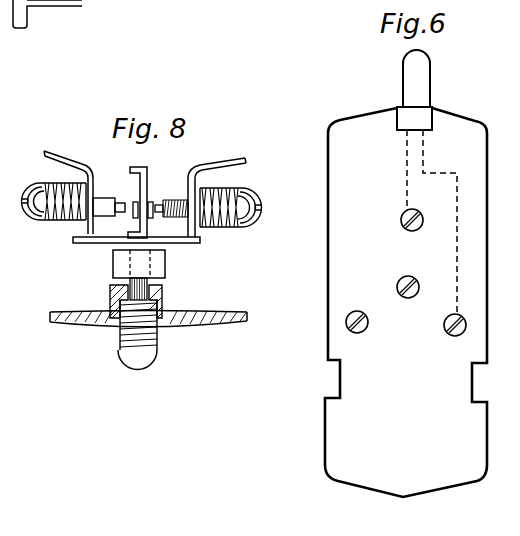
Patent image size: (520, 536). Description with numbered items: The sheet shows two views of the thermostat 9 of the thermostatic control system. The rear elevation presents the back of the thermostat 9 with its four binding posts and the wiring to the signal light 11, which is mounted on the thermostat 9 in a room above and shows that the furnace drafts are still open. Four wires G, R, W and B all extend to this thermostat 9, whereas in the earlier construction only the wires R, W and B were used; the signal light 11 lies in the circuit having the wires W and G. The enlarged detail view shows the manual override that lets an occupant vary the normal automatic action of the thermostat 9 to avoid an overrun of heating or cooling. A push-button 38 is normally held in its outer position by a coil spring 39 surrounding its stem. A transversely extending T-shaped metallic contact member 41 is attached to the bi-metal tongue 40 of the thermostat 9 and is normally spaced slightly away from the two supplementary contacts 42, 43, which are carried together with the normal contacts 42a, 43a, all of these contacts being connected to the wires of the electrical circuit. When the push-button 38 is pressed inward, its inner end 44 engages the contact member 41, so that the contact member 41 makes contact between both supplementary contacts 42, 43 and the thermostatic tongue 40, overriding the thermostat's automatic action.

In FIG. 6, the thermostat 9 is at (491, 299).
In FIG. 6, the signal light 11 is at (424, 85).
In FIG. 8, the push-button 38 is at (128, 362).
In FIG. 8, the coil spring 39 is at (120, 341).
In FIG. 8, the bi-metal tongue 40 is at (150, 195).
In FIG. 8, the contact member 41 is at (96, 245).
In FIG. 8, the supplementary contact 42 is at (80, 234).
In FIG. 8, the normal contact 42a is at (118, 198).
In FIG. 8, the supplementary contact 43 is at (197, 238).
In FIG. 8, the normal contact 43a is at (156, 221).
In FIG. 8, the inner end of push-button 44 is at (165, 267).
In FIG. 6, the wire G is at (412, 230).
In FIG. 6, the wire R is at (408, 297).
In FIG. 6, the wire B is at (357, 332).
In FIG. 6, the wire W is at (455, 333).